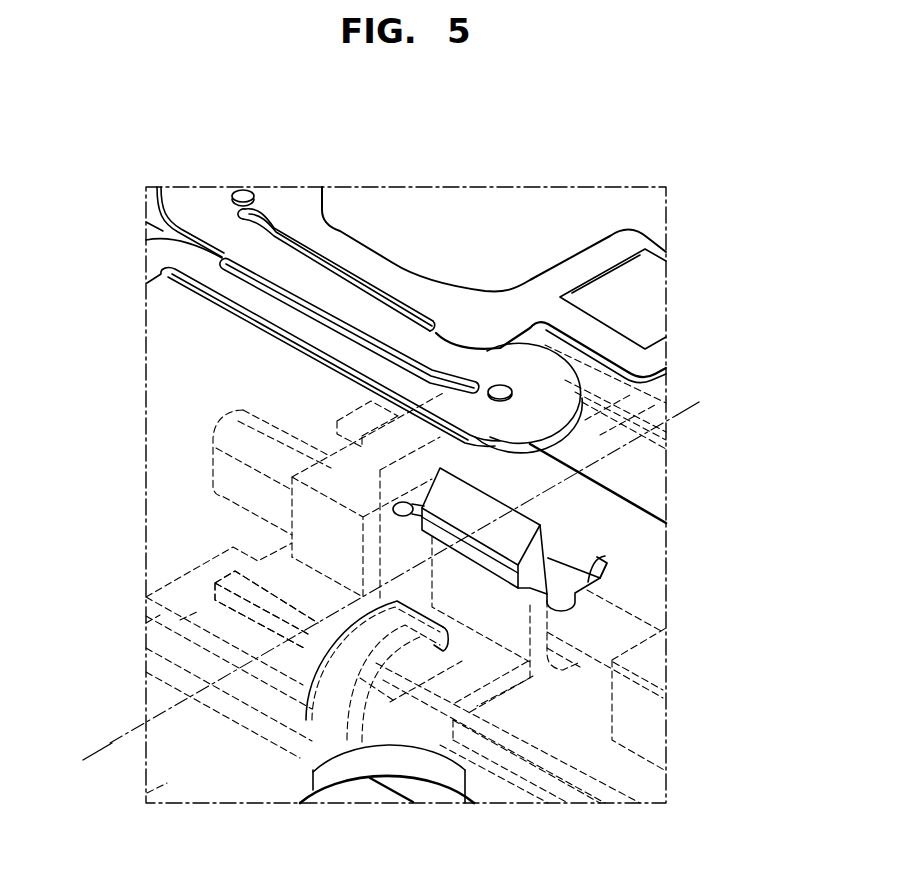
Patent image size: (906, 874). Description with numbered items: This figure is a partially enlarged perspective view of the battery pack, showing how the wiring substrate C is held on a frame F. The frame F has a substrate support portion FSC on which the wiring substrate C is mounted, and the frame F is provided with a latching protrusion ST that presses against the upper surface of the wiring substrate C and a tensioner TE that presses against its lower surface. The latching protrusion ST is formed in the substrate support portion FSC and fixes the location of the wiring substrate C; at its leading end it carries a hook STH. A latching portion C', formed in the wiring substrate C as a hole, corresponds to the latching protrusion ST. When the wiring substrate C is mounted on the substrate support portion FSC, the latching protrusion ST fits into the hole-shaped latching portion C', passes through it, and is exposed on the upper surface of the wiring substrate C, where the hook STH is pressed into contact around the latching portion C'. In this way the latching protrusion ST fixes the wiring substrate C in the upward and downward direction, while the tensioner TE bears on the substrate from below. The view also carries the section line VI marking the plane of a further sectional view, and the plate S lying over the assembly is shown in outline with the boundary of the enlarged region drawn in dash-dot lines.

The spring plate S is at (424, 237).
The wiring substrate C is at (372, 581).
The latching protrusion ST is at (554, 553).
The hook STH is at (506, 545).
The latching portion C' is at (660, 576).
The frame F is at (237, 632).
The substrate support portion FSC is at (193, 609).
The tensioner TE is at (355, 663).
The section line VI- VI is at (692, 418).